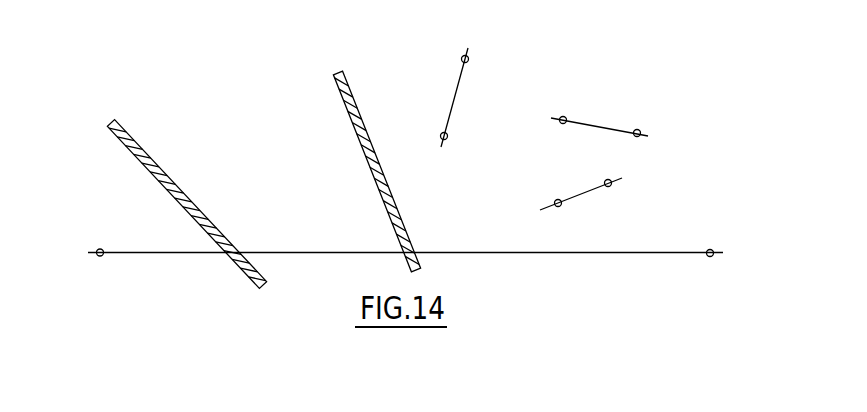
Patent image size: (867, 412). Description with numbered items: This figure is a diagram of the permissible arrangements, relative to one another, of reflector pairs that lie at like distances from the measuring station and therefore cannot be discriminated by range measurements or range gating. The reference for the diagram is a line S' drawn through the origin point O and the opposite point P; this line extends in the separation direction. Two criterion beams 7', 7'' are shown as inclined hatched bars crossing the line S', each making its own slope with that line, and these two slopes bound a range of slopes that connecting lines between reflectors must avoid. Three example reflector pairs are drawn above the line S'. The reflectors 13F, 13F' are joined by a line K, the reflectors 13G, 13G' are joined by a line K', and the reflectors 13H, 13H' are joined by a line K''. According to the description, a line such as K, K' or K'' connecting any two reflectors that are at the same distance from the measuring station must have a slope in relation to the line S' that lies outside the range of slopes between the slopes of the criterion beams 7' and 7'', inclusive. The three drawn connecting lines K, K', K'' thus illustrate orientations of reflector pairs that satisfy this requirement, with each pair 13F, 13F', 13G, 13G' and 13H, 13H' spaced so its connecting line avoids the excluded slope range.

The origin point O is at (98, 247).
The opposite point P is at (713, 250).
The criterion beam 7' is at (186, 204).
The criterion beam 7'' is at (376, 161).
The line S' is at (332, 225).
The line connecting reflectors K is at (469, 97).
The line connecting reflectors K' is at (599, 110).
The line connecting reflectors K'' is at (590, 201).
The reflector 13F is at (494, 51).
The reflector 13F' is at (480, 141).
The reflector 13G is at (558, 100).
The reflector 13G' is at (668, 118).
The reflector 13H is at (527, 192).
The reflector 13H' is at (645, 183).